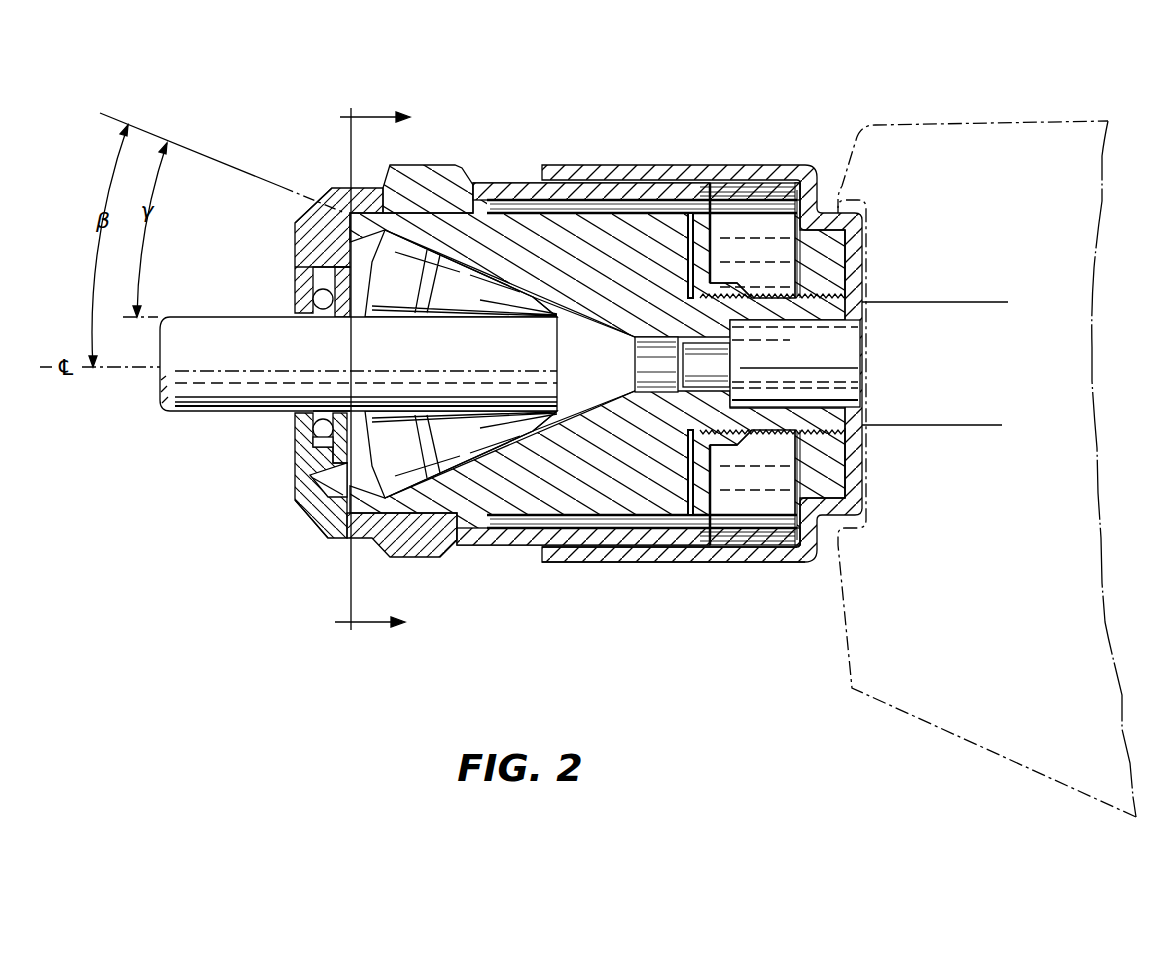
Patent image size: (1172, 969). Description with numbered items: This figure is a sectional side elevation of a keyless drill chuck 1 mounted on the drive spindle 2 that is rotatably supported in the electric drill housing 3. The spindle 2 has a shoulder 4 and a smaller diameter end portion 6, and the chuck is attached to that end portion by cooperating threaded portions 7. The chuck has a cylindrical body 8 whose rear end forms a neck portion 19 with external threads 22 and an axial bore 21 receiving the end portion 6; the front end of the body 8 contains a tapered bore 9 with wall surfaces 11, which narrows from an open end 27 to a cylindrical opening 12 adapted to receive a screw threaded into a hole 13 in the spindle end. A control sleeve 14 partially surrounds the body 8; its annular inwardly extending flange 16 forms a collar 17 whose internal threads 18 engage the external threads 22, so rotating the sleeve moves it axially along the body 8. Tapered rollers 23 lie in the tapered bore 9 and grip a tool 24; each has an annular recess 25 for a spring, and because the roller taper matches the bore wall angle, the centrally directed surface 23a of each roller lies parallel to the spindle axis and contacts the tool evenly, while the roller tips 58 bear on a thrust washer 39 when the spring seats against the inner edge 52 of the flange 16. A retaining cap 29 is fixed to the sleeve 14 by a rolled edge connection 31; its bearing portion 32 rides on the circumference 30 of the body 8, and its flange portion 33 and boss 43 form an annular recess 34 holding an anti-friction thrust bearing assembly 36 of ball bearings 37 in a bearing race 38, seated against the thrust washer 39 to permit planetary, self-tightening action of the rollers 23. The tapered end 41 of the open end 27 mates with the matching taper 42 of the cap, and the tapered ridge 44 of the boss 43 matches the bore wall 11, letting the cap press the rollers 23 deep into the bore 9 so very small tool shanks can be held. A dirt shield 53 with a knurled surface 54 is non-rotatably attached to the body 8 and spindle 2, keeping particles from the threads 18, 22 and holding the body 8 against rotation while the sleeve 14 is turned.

The keyless drill chuck 1 is at (588, 153).
The drive spindle 2 is at (946, 355).
The electric drill housing 3 is at (968, 120).
The shoulder 4 is at (862, 318).
The smaller diameter end portion 6 is at (813, 364).
The cooperating threaded portions 7 is at (840, 402).
The cylindrical body 8 is at (528, 222).
The tapered bore 9 is at (578, 370).
The wall surfaces 11 is at (540, 284).
The cylindrical opening 12 is at (704, 352).
The hole 13 is at (775, 355).
The control sleeve 14 is at (480, 178).
The annular inwardly extending flange 16 is at (715, 218).
The annular collar 17 is at (736, 292).
The internal threads 18 is at (742, 290).
The cylindrical neck portion 19 is at (860, 300).
The axial bore 21 is at (818, 322).
The external threads 22 is at (793, 292).
The tapered rollers 23 is at (408, 277).
The centrally directed surface 23a is at (474, 410).
The tool 24 is at (217, 384).
The annular recess 25 is at (448, 478).
The open end 27 is at (362, 265).
The retaining cap 29 is at (310, 210).
The circumference 30 is at (490, 180).
The rolled edge connection 31 is at (400, 207).
The bearing portion 32 is at (395, 207).
The flange portion 33 is at (338, 270).
The annular recess 34 is at (313, 413).
The anti-friction thrust bearing assembly 36 is at (308, 300).
The ball bearings 37 is at (317, 427).
The bearing race 38 is at (317, 442).
The thrust washer 39 is at (340, 285).
The tapered end 41 is at (416, 515).
The matching taper 42 is at (310, 500).
The boss 43 is at (323, 455).
The tapered ridge 44 is at (323, 483).
The inner edge 52 is at (688, 222).
The dirt shield 53 is at (667, 553).
The knurled surface 54 is at (618, 550).
The outermost tips 58 is at (367, 223).